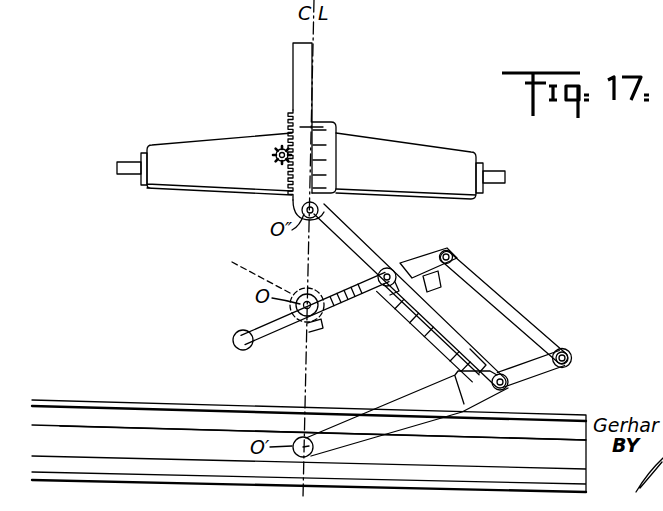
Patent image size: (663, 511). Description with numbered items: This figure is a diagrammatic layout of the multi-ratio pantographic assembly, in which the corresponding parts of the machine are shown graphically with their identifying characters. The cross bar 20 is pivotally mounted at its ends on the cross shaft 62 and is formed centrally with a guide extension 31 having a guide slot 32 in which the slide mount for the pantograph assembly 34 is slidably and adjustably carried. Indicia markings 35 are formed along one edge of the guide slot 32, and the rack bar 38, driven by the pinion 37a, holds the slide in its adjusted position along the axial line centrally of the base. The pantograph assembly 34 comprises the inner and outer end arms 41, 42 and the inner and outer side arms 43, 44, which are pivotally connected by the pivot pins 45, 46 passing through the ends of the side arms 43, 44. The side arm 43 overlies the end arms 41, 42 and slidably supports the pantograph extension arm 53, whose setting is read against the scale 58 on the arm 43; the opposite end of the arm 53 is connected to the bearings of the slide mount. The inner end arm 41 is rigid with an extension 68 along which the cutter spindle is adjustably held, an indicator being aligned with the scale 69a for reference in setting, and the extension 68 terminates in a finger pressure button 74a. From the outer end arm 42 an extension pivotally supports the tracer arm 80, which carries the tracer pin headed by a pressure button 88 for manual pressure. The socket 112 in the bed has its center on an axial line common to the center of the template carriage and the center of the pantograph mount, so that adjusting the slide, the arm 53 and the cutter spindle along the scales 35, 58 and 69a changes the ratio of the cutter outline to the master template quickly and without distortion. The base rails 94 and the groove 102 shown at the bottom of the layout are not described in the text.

The cross bar 20 is at (163, 145).
The cross shaft 62 is at (125, 162).
The rack bar 38 is at (292, 118).
The guide slot 32 is at (317, 125).
The guide extension 31 is at (334, 124).
The indicia markings 35 is at (318, 162).
The pinion 37a is at (274, 155).
The pantograph extension arm 53 is at (355, 232).
The scale 58 is at (462, 336).
The inner side arm 43 is at (492, 362).
The inner end arm 41 is at (422, 262).
The outer side arm 44 is at (497, 298).
The pivot pin 46 is at (448, 251).
The outer end arm 42 is at (552, 373).
The pivot pin 45 is at (380, 276).
The extension 68 is at (270, 335).
The scale 69a is at (343, 304).
The finger pressure button 74a is at (236, 337).
The socket 112 is at (239, 275).
The tracer arm 80 is at (403, 404).
The pressure button 88 is at (318, 449).
The base rail 94 is at (43, 400).
The rail groove 102 is at (124, 427).
The pantograph assembly 34 is at (574, 300).